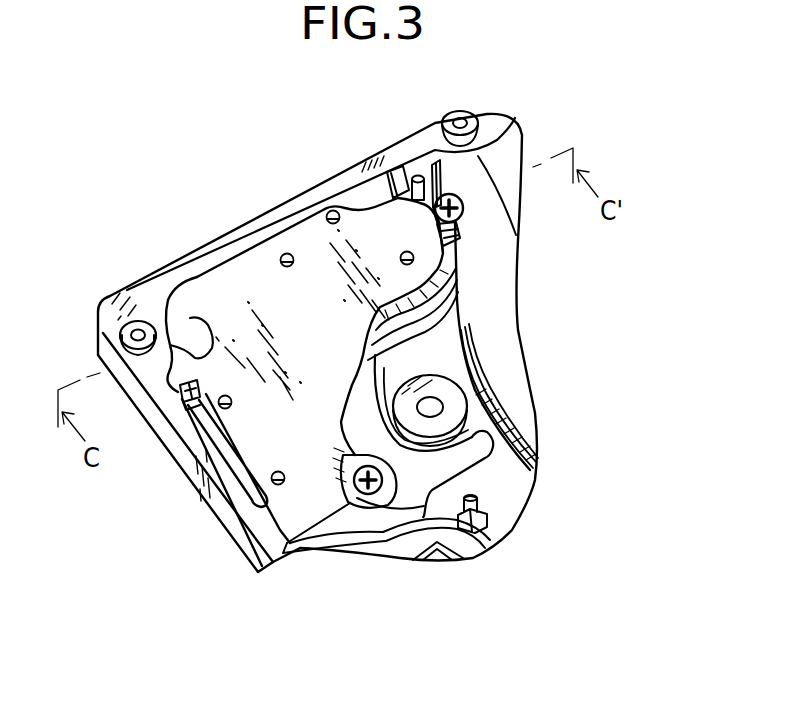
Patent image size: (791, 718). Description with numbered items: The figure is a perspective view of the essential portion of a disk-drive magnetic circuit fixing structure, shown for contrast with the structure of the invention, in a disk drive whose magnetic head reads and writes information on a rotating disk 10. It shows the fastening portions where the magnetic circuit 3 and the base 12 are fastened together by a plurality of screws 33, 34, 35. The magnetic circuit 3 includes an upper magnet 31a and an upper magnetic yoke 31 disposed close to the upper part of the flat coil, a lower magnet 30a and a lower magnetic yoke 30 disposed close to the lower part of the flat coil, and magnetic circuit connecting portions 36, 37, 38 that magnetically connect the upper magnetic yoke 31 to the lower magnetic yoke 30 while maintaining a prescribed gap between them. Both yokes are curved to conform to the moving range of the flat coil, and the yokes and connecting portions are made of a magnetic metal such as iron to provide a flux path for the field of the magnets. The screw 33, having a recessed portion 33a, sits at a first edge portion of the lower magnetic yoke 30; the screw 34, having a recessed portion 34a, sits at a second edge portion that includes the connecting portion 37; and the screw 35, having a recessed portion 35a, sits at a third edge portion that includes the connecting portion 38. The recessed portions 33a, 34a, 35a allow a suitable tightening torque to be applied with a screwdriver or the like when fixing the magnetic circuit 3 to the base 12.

The magnetic circuit 3 is at (323, 181).
The disk 10 is at (508, 387).
The base 12 is at (485, 428).
The lower magnetic yoke 30 is at (447, 318).
The lower magnet 30a is at (470, 335).
The upper magnetic yoke 31 is at (237, 283).
The upper magnet 31a is at (425, 297).
The screw 33 is at (436, 194).
The recessed portion 33a is at (459, 221).
The screw 34 is at (183, 402).
The recessed portion 34a is at (184, 408).
The screw 35 is at (362, 484).
The recessed portion 35a is at (372, 496).
The magnetic circuit connecting portion 36 is at (462, 247).
The magnetic circuit connecting portion 37 is at (180, 303).
The magnetic circuit connecting portion 38 is at (307, 522).